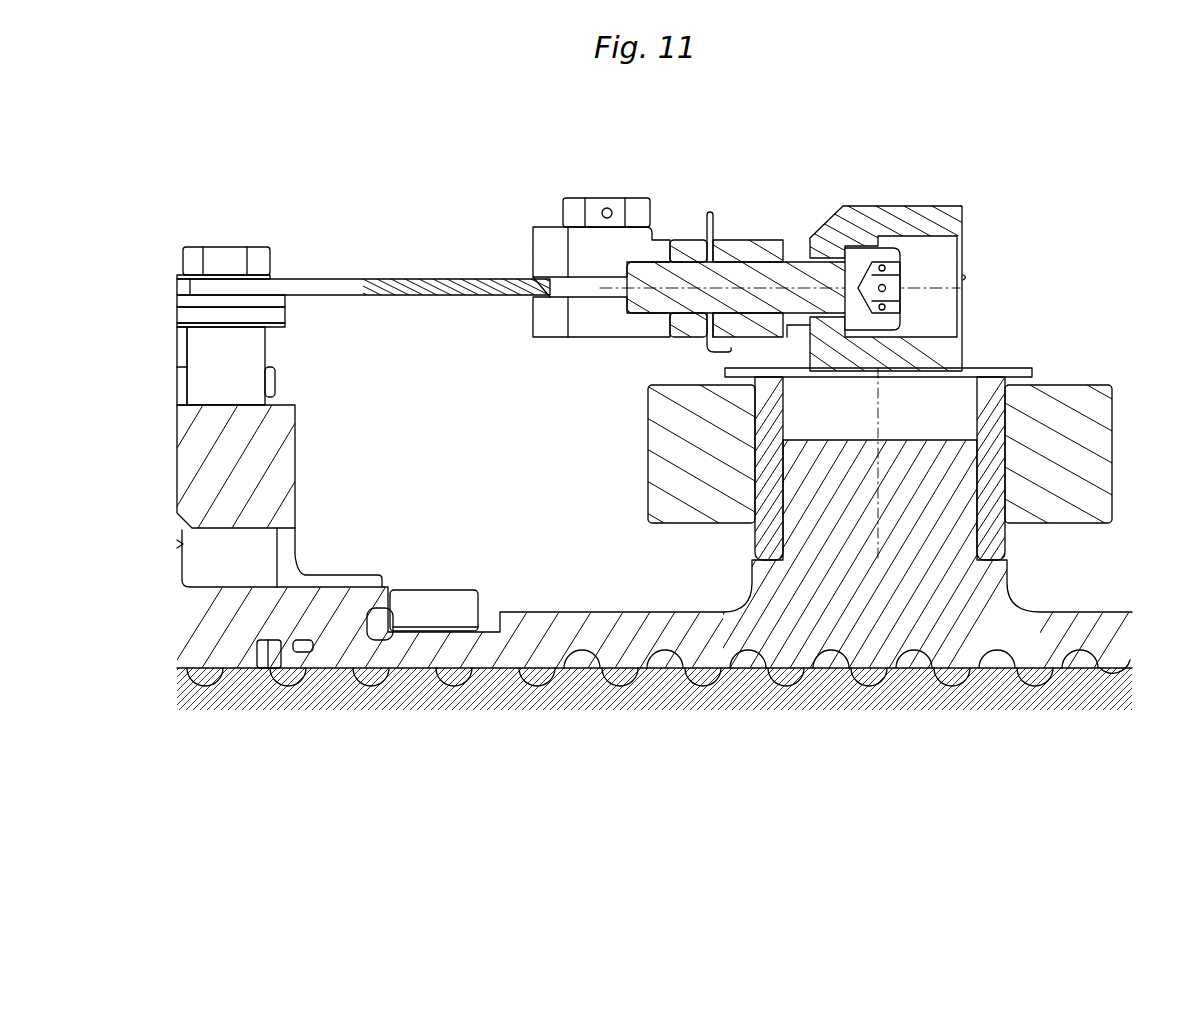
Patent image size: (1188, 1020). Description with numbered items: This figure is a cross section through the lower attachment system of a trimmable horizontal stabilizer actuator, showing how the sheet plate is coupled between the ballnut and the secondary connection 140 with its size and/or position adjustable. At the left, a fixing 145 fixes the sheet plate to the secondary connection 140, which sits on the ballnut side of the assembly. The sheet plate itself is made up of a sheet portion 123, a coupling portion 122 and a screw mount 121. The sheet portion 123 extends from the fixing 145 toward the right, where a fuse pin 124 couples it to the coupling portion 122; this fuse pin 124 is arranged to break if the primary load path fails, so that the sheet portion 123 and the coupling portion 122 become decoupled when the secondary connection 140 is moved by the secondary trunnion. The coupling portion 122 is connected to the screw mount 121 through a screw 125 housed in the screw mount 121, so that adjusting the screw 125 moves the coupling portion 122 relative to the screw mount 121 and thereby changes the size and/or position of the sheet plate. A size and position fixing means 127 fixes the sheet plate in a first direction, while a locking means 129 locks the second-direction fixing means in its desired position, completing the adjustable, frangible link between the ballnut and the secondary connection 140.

The screw mount 121 is at (930, 220).
The coupling portion 122 is at (686, 250).
The sheet portion 123 is at (350, 284).
The fuse pin 124 is at (578, 212).
The screw 125 is at (797, 283).
The size and position fixing means 127 is at (632, 314).
The locking means 129 is at (713, 215).
The secondary connection 140 is at (268, 492).
The fixing 145 is at (215, 258).